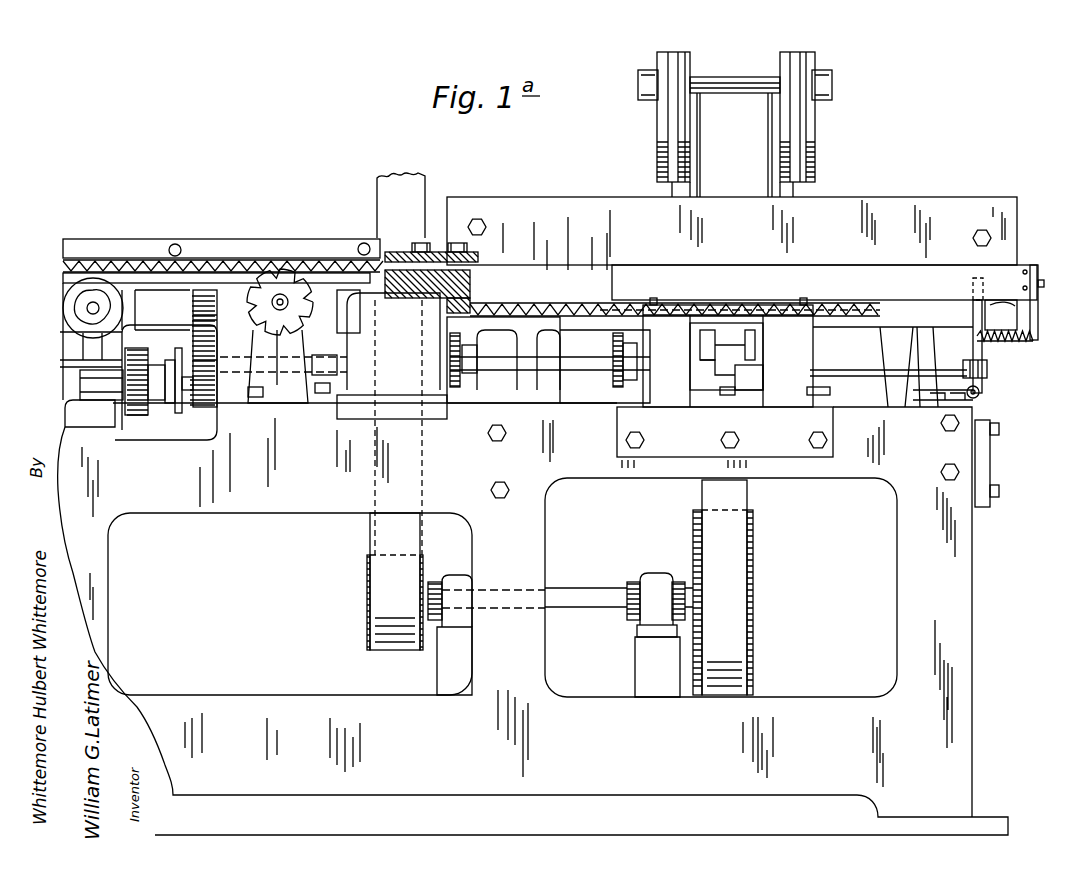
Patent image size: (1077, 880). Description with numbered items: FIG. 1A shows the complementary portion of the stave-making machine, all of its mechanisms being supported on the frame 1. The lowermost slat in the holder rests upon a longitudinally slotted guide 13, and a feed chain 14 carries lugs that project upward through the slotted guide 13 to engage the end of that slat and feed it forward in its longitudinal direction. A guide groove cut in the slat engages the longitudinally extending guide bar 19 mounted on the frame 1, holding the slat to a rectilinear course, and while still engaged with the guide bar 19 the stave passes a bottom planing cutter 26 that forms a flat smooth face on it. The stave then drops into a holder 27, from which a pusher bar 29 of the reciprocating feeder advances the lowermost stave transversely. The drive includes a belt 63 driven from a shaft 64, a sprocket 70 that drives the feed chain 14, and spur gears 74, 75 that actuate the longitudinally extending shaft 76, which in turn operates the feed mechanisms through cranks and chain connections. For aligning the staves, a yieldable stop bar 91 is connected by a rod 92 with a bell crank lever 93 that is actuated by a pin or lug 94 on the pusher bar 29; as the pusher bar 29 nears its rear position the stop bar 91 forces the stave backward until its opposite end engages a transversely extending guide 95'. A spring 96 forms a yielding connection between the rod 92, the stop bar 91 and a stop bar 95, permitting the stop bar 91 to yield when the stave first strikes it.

The frame 1 is at (970, 575).
The longitudinally slotted guide 13 is at (62, 270).
The feed chain 14 is at (62, 333).
The guide bar 19 is at (197, 247).
The bottom planing cutter 26 is at (290, 273).
The holder 27 is at (515, 312).
The pusher bar 29 is at (735, 300).
The belt 63 is at (737, 593).
The shaft 64 is at (600, 597).
The sprocket 70 is at (100, 300).
The spur gear 74 is at (205, 297).
The spur gear 75 is at (200, 407).
The longitudinally extending shaft 76 is at (322, 358).
The yieldable stop bar 91 is at (983, 352).
The rod 92 is at (863, 370).
The bell crank lever 93 is at (757, 378).
The pin or lug 94 is at (745, 395).
The stop bar 95 is at (1021, 322).
The transversely extending guide 95' is at (454, 282).
The spring 96 is at (992, 318).